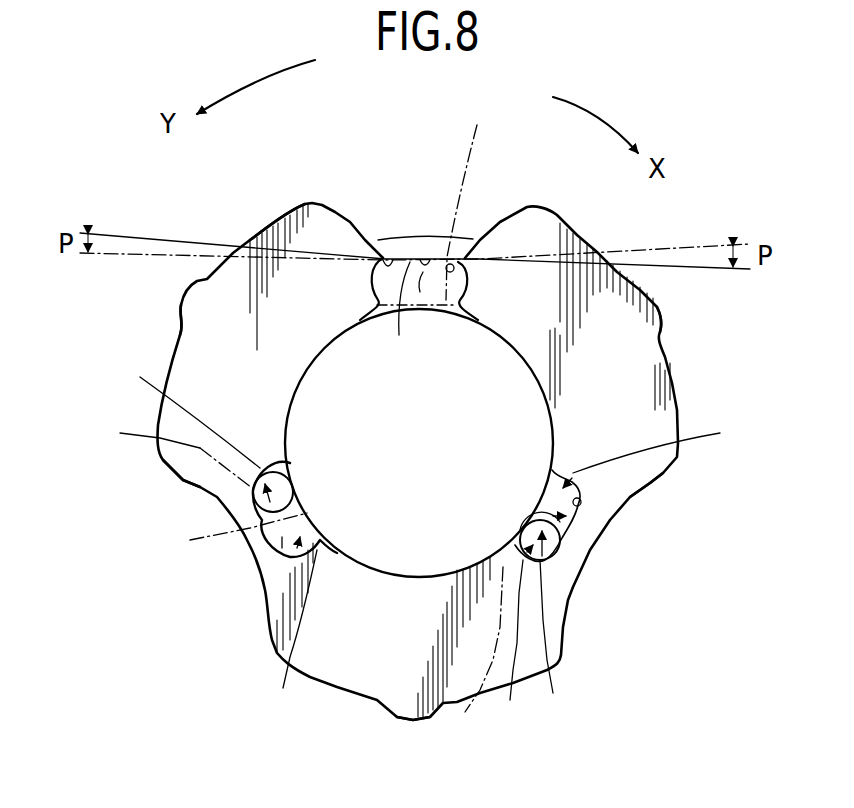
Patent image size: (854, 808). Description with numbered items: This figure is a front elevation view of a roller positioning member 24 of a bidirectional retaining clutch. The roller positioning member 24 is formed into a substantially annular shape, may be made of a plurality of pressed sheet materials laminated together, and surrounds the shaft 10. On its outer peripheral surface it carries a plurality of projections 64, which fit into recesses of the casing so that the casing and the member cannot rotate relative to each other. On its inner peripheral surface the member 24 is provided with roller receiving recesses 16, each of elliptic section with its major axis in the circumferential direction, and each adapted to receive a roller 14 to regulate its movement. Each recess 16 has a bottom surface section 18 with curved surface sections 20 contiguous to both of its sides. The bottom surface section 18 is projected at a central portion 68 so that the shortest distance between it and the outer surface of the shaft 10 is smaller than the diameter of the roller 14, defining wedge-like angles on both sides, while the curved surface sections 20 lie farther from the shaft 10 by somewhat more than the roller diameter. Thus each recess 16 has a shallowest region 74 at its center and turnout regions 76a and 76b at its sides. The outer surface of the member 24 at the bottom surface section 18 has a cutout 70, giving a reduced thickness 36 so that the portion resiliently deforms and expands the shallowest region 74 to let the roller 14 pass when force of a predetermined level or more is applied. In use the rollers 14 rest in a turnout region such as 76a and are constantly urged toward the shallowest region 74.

The shaft 10 is at (522, 390).
The roller 14 is at (294, 418).
The roller receiving recess 16 is at (452, 286).
The bottom surface section 18 is at (400, 310).
The curved surface sections 20 is at (383, 256).
The roller positioning member 24 is at (692, 405).
The reduced thickness 36 is at (398, 257).
The projected central portion 68 is at (423, 257).
The cutout 70 is at (318, 200).
The shallowest region 74 is at (356, 623).
The turnout region 76a is at (310, 543).
The turnout region 76b is at (511, 567).
The projections 64 is at (183, 305).